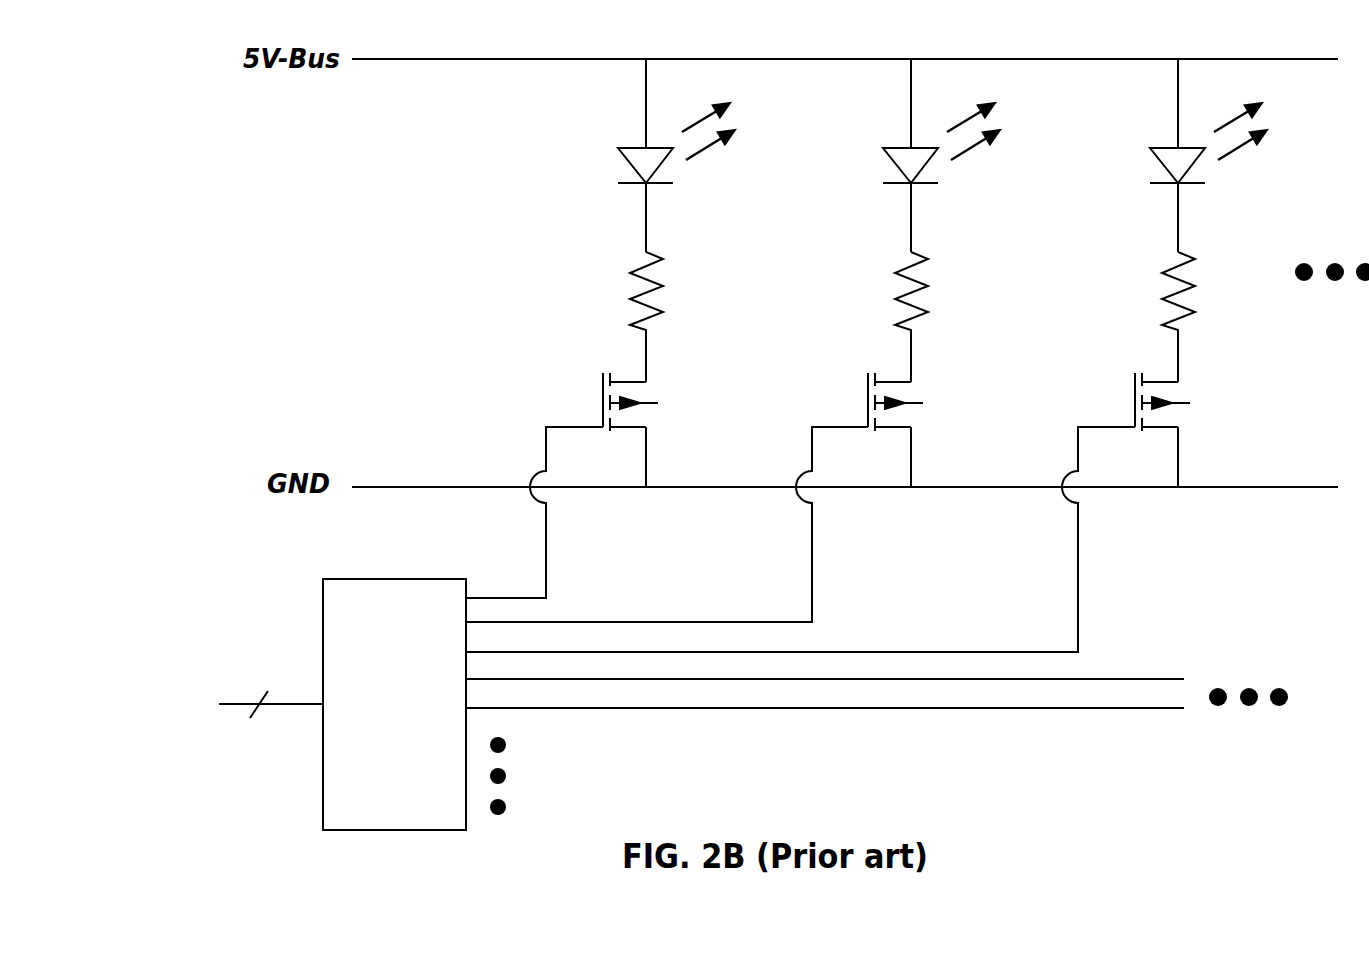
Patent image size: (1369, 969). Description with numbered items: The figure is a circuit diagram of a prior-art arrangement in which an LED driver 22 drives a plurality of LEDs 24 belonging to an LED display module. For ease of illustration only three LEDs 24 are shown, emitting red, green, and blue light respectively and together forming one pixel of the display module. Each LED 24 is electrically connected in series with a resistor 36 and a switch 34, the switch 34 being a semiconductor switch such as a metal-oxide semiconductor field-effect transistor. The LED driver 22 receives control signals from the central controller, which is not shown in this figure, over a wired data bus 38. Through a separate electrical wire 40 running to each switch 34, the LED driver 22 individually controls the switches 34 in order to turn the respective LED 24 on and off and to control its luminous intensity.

The LED driver 22 is at (317, 795).
The LED 24 is at (625, 187).
The switch 34 is at (603, 382).
The resistor 36 is at (663, 315).
The wired data bus 38 is at (245, 698).
The electrical wire 40 is at (546, 573).